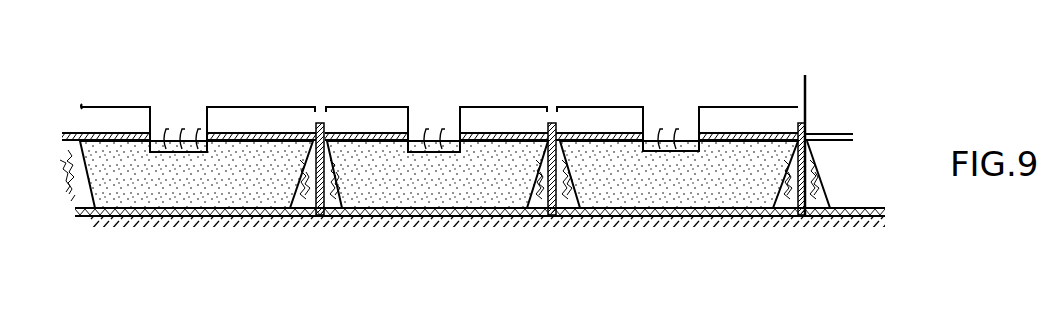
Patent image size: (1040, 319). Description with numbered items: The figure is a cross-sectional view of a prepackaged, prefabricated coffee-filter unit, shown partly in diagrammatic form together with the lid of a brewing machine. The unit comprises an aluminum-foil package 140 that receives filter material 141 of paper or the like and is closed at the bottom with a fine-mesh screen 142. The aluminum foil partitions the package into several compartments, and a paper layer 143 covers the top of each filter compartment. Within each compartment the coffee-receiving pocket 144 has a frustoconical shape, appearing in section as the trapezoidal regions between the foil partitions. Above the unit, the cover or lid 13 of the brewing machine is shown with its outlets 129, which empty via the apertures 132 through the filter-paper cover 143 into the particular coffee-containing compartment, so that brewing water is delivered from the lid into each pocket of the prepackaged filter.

The cover or lid 13 is at (797, 123).
The outlets 129 is at (642, 140).
The apertures 132 is at (663, 140).
The aluminum-foil package 140 is at (786, 214).
The filter material 141 is at (555, 215).
The fine-mesh screen 142 is at (678, 214).
The paper layer 143 is at (585, 137).
The coffee-receiving pocket 144 is at (577, 197).